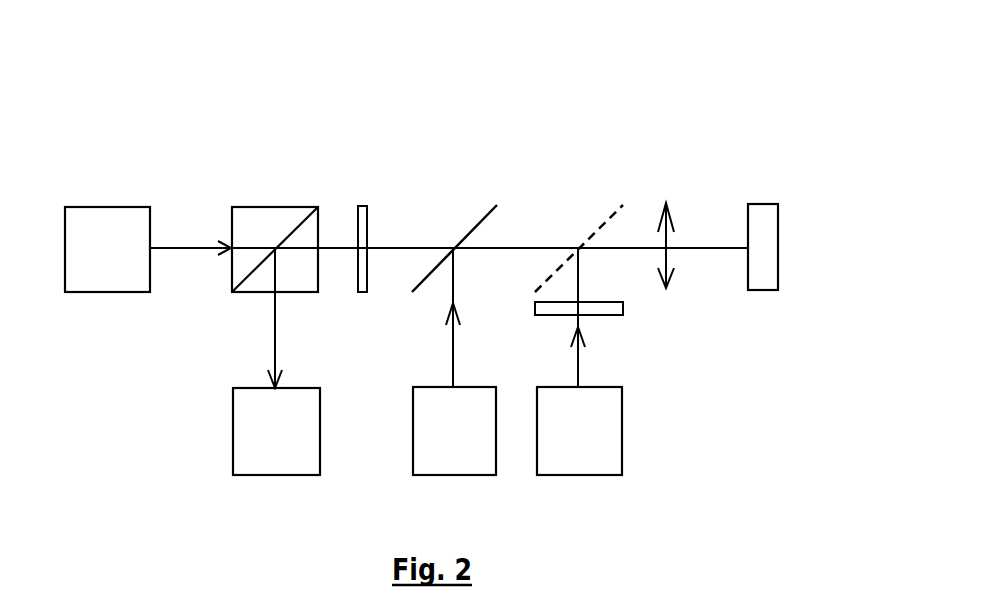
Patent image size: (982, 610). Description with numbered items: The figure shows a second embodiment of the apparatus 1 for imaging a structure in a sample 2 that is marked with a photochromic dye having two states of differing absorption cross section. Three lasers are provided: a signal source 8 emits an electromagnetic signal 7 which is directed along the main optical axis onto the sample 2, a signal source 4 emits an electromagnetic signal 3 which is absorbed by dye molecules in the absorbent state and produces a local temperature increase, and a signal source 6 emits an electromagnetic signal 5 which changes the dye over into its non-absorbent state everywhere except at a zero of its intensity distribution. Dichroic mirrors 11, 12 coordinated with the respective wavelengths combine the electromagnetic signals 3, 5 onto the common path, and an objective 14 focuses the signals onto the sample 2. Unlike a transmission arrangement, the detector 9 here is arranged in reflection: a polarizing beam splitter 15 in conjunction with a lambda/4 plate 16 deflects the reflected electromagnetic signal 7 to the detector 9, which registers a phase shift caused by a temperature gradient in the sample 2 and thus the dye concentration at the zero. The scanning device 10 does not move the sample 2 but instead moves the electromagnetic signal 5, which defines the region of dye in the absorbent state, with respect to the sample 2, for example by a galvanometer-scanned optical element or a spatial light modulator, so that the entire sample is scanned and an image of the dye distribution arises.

The apparatus 1 is at (542, 95).
The sample 2 is at (778, 220).
The electromagnetic signal 3 is at (453, 333).
The signal source 4 is at (412, 450).
The electromagnetic signal 5 is at (578, 357).
The signal source 6 is at (622, 432).
The electromagnetic signal 7 is at (190, 252).
The signal source 8 is at (110, 292).
The detector 9 is at (233, 452).
The scanning device 10 is at (620, 308).
The dichroic mirror 11 is at (475, 225).
The dichroic mirror 12 is at (602, 223).
The objective 14 is at (682, 180).
The polarizing beam splitter 15 is at (275, 205).
The lambda/4 plate 16 is at (363, 203).